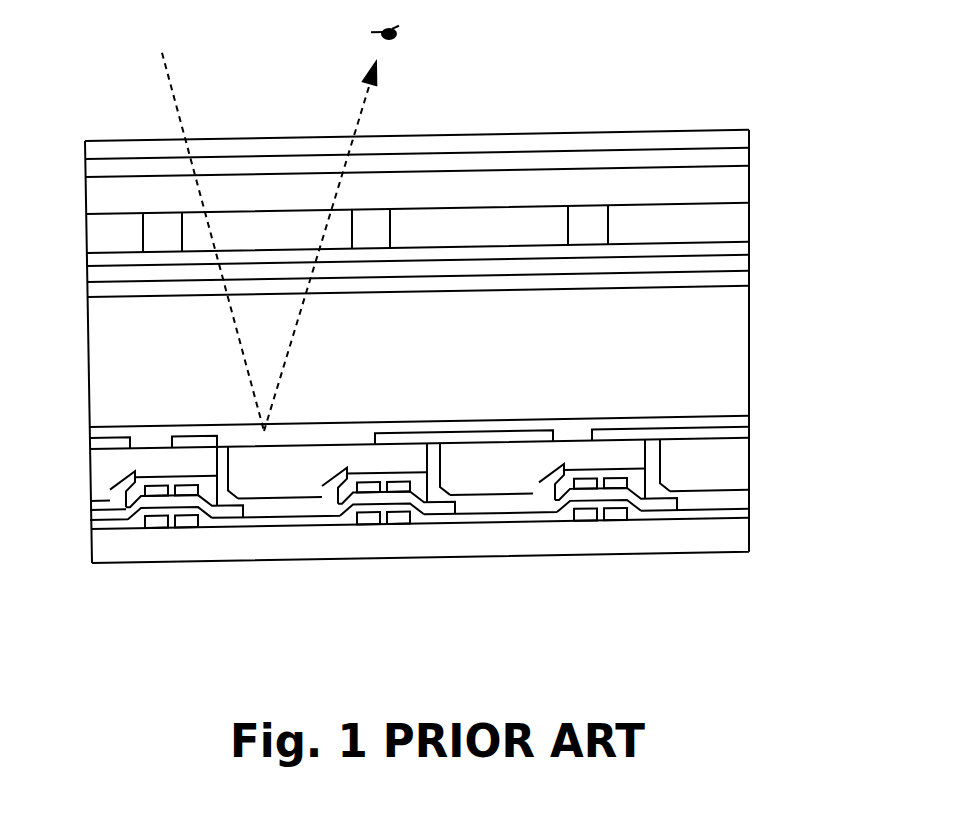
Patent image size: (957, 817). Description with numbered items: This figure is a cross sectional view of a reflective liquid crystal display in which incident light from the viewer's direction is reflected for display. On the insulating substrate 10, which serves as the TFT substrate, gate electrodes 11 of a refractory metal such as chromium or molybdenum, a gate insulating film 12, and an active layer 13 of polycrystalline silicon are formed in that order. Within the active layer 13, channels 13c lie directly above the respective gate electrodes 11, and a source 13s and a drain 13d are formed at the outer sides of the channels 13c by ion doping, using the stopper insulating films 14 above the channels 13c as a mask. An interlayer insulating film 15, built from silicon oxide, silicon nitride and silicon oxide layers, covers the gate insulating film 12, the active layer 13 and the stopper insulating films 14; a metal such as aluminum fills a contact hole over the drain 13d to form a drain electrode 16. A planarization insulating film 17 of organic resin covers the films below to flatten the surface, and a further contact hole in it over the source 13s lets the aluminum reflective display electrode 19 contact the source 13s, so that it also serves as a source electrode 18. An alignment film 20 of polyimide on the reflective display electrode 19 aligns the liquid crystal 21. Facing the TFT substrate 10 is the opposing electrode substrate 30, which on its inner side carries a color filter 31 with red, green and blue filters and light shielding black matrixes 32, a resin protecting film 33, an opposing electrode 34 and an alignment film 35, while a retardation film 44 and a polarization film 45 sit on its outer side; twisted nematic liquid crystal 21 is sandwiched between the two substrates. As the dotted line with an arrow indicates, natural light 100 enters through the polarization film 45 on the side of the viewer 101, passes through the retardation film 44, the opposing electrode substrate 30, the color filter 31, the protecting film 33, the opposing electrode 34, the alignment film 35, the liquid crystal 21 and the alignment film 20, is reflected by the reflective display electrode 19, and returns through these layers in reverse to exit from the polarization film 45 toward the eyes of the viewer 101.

The insulating substrate 10 is at (98, 553).
The gate electrode 11 is at (152, 531).
The gate insulating film 12 is at (748, 523).
The active layer 13 is at (92, 517).
The channel 13c is at (172, 512).
The drain 13d is at (113, 531).
The source 13s is at (238, 530).
The stopper insulating film 14 is at (150, 488).
The interlayer insulating film 15 is at (95, 508).
The drain electrode 16 is at (108, 478).
The planarization insulating film 17 is at (97, 465).
The source electrode 18 is at (225, 470).
The reflective display electrode 19 is at (203, 445).
The alignment film 20 is at (748, 429).
The liquid crystal 21 is at (745, 370).
The opposing electrode substrate 30 is at (750, 198).
The color filter 31 is at (750, 229).
The black matrix 32 is at (163, 222).
The protecting film 33 is at (750, 255).
The opposing electrode 34 is at (750, 276).
The alignment film 35 is at (750, 292).
The retardation film 44 is at (745, 166).
The polarization film 45 is at (750, 146).
The natural light 100 is at (180, 107).
The viewer 101 is at (396, 37).